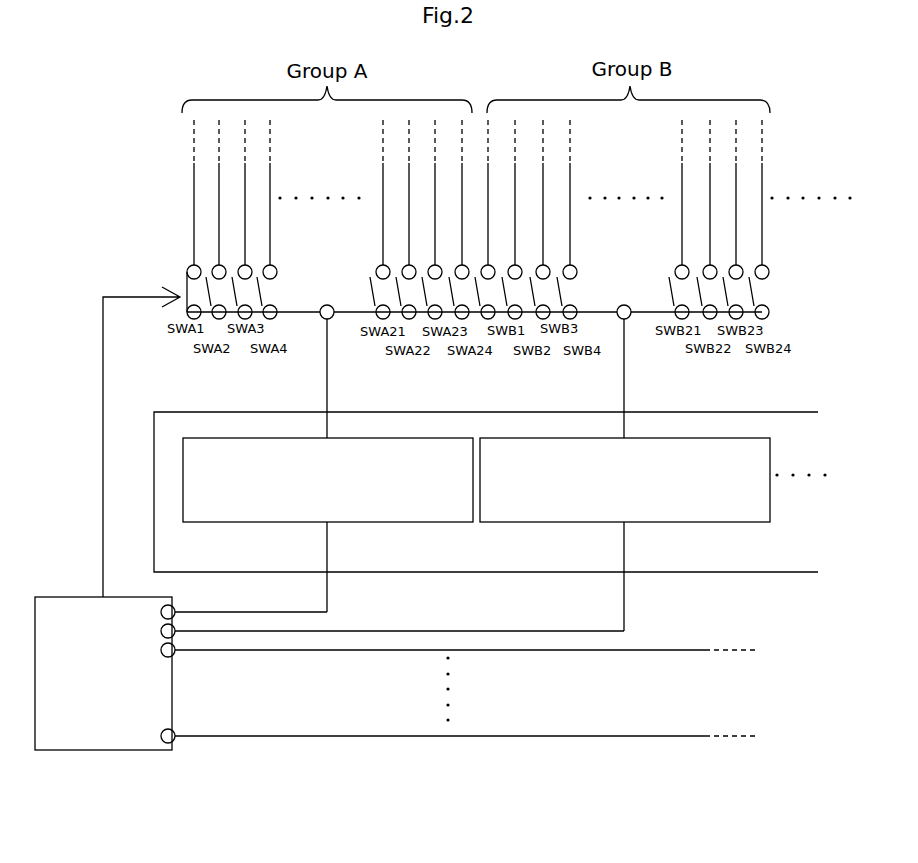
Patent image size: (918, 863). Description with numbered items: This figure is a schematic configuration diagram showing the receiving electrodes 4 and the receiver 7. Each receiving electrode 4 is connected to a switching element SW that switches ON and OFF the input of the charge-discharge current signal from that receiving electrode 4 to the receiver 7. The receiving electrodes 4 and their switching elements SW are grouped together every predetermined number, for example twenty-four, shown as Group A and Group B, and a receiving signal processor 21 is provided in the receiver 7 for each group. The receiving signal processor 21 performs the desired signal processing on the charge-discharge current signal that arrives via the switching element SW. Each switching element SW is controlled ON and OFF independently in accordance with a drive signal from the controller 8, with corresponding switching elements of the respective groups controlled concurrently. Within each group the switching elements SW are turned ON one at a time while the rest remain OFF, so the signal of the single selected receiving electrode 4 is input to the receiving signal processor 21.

The receiving electrode 4 is at (194, 230).
The receiver 7 is at (773, 573).
The controller 8 is at (143, 751).
The receiving signal processor 21 is at (461, 523).